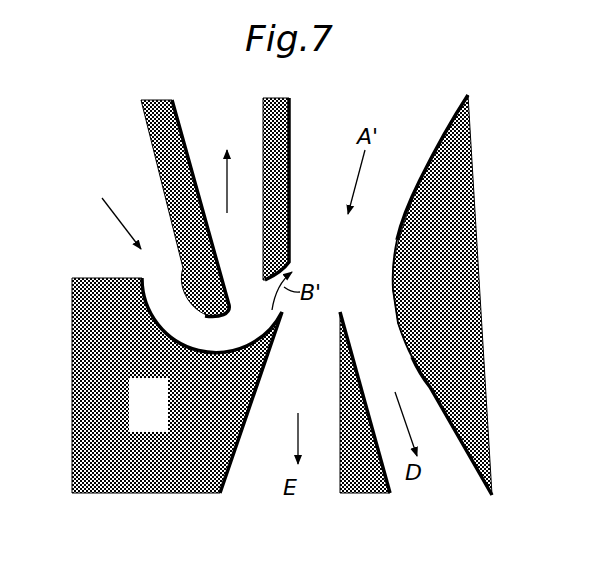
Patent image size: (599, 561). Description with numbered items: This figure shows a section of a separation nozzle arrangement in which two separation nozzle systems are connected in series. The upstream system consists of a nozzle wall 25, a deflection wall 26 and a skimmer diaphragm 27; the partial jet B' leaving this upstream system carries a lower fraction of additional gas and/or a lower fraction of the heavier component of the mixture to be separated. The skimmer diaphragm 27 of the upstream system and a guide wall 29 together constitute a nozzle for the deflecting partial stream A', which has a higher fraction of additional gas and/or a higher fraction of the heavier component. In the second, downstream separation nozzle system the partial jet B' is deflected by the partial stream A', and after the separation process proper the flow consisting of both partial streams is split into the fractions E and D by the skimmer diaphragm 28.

The nozzle wall 25 is at (155, 101).
The deflection wall 26 is at (163, 425).
The skimmer diaphragm 27 is at (263, 244).
The skimmer diaphragm 28 is at (368, 493).
The guide wall 29 is at (408, 215).